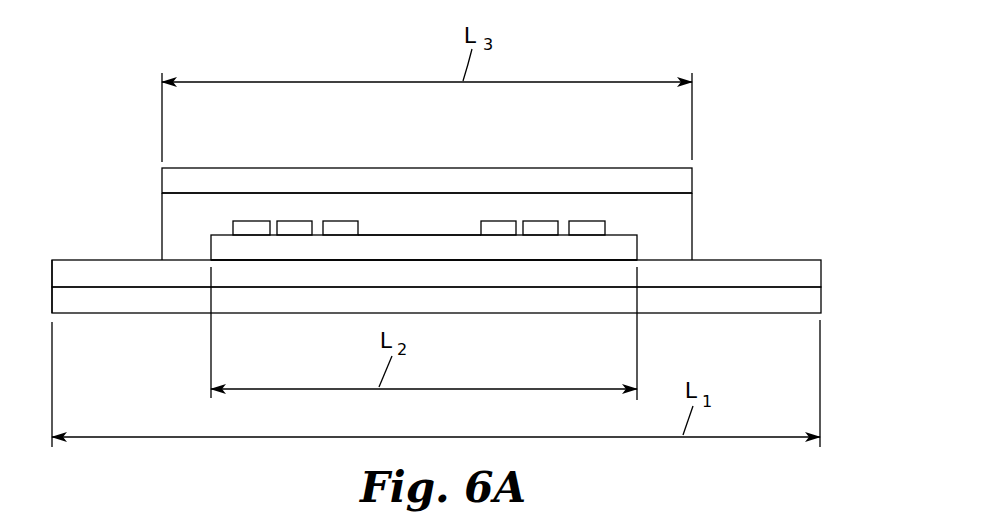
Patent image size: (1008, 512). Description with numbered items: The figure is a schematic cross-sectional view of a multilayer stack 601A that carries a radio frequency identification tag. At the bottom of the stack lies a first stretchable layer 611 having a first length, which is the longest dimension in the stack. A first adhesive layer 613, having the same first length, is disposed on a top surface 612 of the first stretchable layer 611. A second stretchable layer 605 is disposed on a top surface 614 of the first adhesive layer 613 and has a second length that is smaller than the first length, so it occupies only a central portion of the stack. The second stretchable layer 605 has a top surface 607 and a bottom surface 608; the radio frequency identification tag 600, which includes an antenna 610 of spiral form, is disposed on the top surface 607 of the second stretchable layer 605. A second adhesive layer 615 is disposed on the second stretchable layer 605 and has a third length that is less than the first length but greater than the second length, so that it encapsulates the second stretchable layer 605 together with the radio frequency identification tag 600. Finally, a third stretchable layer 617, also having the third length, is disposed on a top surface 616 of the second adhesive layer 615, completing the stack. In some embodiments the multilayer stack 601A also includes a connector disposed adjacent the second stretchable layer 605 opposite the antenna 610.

The multilayer stack 601A is at (774, 83).
The top surface of the first stretchable layer 612 is at (763, 288).
The first adhesive layer 613 is at (812, 274).
The first stretchable layer 611 is at (812, 300).
The top surface of the first adhesive layer 614 is at (60, 260).
The second stretchable layer 605 is at (628, 250).
The bottom surface of the second stretchable layer 608 is at (506, 263).
The top surface of the second stretchable layer 607 is at (380, 233).
The radio frequency identification tag 600 is at (541, 225).
The antenna 610 is at (603, 227).
The third stretchable layer 617 is at (170, 181).
The top surface of the second adhesive layer 616 is at (602, 193).
The second adhesive layer 615 is at (173, 215).